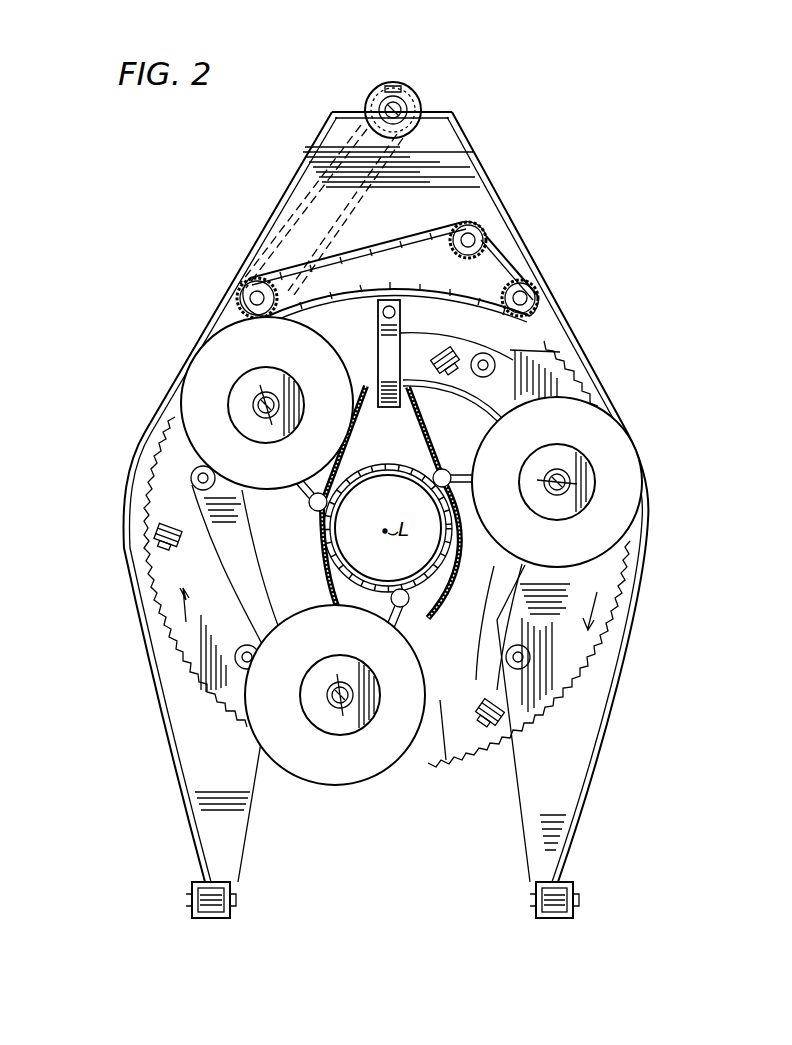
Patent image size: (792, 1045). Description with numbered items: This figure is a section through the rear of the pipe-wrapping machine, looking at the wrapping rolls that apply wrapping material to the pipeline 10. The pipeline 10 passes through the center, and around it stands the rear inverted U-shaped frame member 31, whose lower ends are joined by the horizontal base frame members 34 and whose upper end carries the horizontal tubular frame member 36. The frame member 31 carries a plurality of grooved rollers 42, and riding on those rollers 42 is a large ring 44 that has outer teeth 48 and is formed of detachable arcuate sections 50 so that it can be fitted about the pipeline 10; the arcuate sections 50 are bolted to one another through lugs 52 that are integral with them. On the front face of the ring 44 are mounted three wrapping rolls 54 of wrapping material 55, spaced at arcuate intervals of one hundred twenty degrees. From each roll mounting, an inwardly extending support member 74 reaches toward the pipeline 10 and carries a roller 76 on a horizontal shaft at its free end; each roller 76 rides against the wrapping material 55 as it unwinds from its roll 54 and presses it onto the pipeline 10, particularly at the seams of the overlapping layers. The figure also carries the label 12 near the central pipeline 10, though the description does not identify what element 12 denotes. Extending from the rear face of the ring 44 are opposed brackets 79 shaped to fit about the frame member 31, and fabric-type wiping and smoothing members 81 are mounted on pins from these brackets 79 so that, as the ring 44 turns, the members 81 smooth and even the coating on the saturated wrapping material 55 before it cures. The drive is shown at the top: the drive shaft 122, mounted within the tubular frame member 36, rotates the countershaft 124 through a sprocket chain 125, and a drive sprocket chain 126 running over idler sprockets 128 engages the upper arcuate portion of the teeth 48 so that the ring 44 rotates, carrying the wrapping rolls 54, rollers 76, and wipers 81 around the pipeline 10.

The pipeline 10 is at (336, 524).
The chain band 12 is at (396, 470).
The inverted U-shaped frame member 31 is at (572, 782).
The base frame member 34 is at (192, 900).
The tubular frame member 36 is at (388, 90).
The grooved rollers 42 is at (495, 368).
The ring 44 is at (418, 757).
The outer teeth 48 is at (560, 352).
The arcuate sections 50 is at (540, 306).
The lugs 52 is at (462, 354).
The wrapping rolls 54 is at (215, 366).
The wrapping material 55 is at (348, 436).
The support member 74 is at (455, 470).
The roller 76 is at (443, 468).
The brackets 79 is at (403, 353).
The wiping and smoothing members 81 is at (446, 702).
The drive shaft 122 is at (420, 99).
The countershaft 124 is at (237, 295).
The sprocket chain 125 is at (302, 190).
The drive sprocket chain 126 is at (360, 288).
The idler sprockets 128 is at (532, 284).